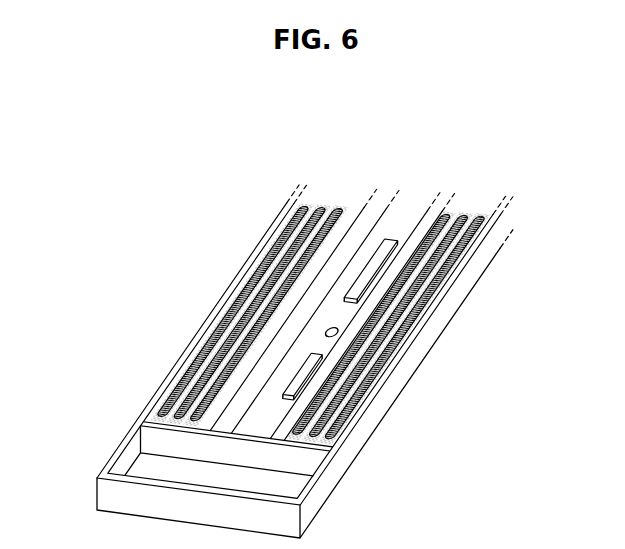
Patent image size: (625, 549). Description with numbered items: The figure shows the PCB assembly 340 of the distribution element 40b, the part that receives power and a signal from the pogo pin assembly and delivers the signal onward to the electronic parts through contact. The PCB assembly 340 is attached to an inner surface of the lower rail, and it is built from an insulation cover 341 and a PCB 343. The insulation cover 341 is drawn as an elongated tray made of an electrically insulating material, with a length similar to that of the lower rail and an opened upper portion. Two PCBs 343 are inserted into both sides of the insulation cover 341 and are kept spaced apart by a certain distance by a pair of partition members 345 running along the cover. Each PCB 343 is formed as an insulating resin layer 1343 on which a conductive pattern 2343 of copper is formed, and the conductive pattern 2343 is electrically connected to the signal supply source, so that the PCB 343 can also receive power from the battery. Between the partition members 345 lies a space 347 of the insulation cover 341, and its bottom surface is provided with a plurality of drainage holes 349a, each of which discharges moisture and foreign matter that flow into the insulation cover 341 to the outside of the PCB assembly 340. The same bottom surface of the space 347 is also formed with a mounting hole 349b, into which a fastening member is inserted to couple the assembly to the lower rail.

The PCB assembly 340 is at (294, 158).
The distribution element 40b is at (316, 343).
The insulation cover 341 is at (324, 487).
The PCB 343 is at (80, 280).
The insulating resin layer 1343 is at (223, 313).
The conductive pattern 2343 is at (205, 345).
The partition member 345 is at (353, 243).
The space 347 is at (394, 237).
The drainage hole 349a is at (300, 404).
The mounting hole 349b is at (331, 328).